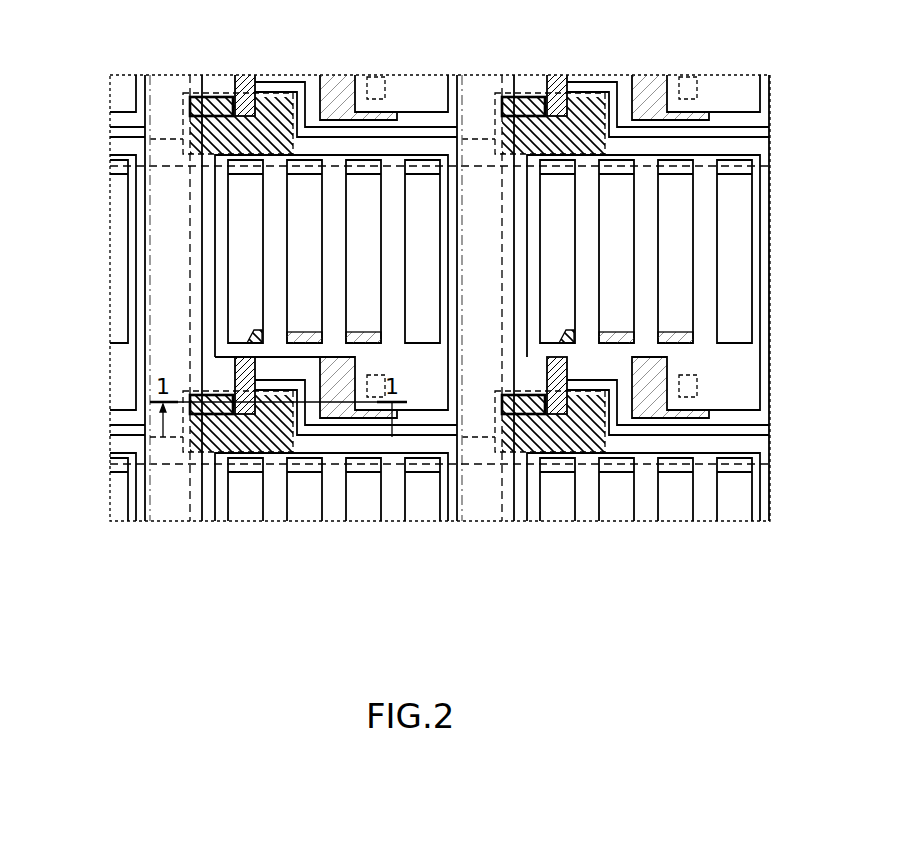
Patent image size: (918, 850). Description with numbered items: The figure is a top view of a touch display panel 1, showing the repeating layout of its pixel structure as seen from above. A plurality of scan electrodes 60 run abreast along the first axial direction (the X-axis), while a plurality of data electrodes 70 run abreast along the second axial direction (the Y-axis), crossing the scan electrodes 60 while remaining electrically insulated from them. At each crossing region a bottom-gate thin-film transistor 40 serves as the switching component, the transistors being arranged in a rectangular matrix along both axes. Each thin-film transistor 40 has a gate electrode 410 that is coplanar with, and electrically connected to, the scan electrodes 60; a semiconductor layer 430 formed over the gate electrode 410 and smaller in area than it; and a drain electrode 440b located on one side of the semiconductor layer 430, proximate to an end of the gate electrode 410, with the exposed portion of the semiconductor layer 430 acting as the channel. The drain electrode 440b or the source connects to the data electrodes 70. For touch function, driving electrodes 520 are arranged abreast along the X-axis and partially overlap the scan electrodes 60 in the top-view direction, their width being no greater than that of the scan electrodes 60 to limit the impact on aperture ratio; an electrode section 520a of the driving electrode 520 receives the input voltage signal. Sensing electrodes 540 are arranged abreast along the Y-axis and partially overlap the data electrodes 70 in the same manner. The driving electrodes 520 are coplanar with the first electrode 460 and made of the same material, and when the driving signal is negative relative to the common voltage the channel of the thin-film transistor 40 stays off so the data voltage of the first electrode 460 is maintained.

The touch display panel 1 is at (55, 33).
The thin-film transistor 40 is at (200, 391).
The scan electrode 60 is at (120, 180).
The data electrode 70 is at (170, 493).
The gate electrode 410 is at (533, 382).
The semiconductor layer 430 is at (562, 430).
The drain electrode 440b is at (648, 388).
The first electrode 460 is at (736, 372).
The driving electrode 520 is at (120, 462).
The electrode section 520a is at (216, 393).
The sensing electrode 540 is at (147, 494).